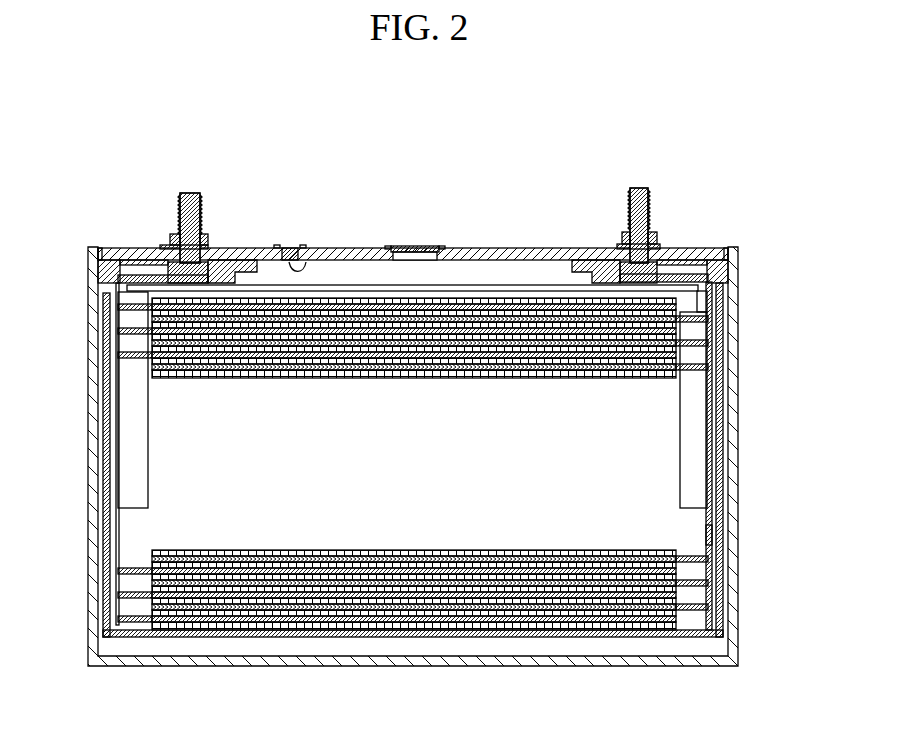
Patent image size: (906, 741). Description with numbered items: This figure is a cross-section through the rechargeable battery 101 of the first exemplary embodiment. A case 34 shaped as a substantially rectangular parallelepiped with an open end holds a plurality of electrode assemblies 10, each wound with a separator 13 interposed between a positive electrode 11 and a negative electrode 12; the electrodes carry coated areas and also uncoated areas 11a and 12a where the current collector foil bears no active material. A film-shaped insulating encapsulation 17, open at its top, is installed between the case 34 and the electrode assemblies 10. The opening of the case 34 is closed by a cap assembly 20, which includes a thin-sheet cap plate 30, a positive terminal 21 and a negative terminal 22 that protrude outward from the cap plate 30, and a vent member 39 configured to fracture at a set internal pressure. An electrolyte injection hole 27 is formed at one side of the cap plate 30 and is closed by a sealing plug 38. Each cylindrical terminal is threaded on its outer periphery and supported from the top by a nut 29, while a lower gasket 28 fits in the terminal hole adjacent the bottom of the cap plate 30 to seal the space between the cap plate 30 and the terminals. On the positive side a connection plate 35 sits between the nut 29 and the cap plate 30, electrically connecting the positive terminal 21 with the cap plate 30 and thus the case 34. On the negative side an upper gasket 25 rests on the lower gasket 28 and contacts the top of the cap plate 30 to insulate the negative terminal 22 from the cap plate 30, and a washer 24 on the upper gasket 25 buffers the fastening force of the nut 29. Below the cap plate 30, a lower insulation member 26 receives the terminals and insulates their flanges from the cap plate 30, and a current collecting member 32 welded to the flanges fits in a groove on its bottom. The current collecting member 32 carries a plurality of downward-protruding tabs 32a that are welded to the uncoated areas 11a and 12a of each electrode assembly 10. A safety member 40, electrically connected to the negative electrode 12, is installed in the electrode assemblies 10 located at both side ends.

The battery 101 is at (428, 133).
The electrode assembly 10 is at (413, 514).
The positive electrode 11 is at (397, 513).
The uncoated area 11a is at (138, 624).
The negative electrode 12 is at (430, 519).
The uncoated area 12a is at (688, 612).
The separator 13 is at (412, 602).
The insulating encapsulation 17 is at (720, 477).
The cap assembly 20 is at (255, 240).
The positive terminal 21 is at (200, 203).
The negative terminal 22 is at (629, 202).
The washer 24 is at (617, 246).
The upper gasket 25 is at (662, 248).
The lower insulation member 26 is at (100, 272).
The electrolyte injection hole 27 is at (306, 262).
The lower gasket 28 is at (160, 256).
The nut 29 is at (173, 236).
The cap plate 30 is at (470, 249).
The current collecting member 32 is at (108, 289).
The tab 32a is at (128, 434).
The case 34 is at (734, 393).
The connection plate 35 is at (165, 247).
The sealing plug 38 is at (286, 247).
The vent member 39 is at (412, 247).
The safety member 40 is at (722, 535).